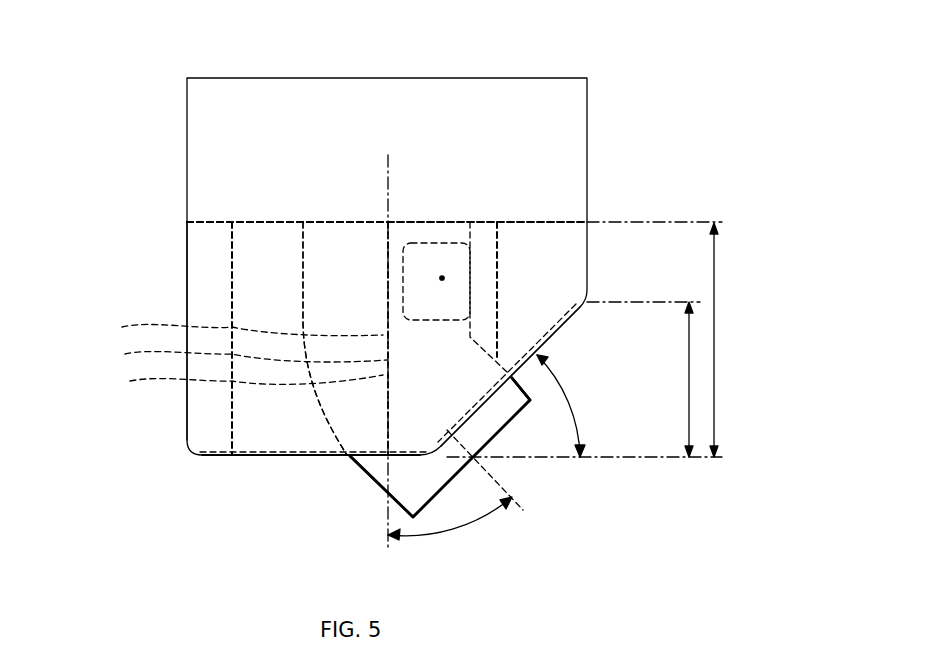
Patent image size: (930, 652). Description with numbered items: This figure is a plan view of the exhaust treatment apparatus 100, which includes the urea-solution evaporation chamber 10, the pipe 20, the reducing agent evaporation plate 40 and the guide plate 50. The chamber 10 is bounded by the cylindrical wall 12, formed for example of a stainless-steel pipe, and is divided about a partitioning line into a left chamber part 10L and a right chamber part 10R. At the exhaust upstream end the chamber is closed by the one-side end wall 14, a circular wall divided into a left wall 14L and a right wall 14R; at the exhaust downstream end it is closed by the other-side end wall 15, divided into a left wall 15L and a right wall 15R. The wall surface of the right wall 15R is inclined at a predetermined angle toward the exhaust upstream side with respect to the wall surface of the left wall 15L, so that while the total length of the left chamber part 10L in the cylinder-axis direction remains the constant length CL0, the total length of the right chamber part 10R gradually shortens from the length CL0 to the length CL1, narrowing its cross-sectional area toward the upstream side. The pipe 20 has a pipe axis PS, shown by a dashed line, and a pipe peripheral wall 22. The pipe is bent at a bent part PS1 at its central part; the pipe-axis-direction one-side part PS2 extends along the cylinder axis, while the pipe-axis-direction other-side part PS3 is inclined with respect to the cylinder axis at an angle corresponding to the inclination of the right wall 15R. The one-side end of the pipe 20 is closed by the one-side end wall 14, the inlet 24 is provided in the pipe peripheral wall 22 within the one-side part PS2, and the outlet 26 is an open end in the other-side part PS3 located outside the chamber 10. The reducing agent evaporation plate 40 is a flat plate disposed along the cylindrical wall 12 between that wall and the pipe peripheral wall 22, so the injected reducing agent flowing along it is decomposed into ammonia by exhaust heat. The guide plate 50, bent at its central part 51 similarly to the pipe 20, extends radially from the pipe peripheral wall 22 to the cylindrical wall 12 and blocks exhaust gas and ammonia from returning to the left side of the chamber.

The exhaust treatment apparatus 100 is at (608, 75).
The urea-solution evaporation chamber 10 is at (295, 428).
The left chamber part 10L is at (313, 374).
The right chamber part 10R is at (537, 317).
The cylindrical wall 12 is at (187, 310).
The one-side end wall 14 is at (232, 224).
The left wall 14L is at (234, 247).
The right wall 14R is at (553, 226).
The other-side end wall 15 is at (248, 460).
The left wall 15L is at (304, 491).
The right wall 15R is at (552, 342).
The pipe 20 is at (377, 485).
The pipe peripheral wall 22 is at (440, 473).
The inlet 24 is at (442, 278).
The outlet 26 is at (528, 402).
The reducing agent evaporation plate 40 is at (232, 403).
The guide plate 50 is at (235, 330).
The central part 51 is at (238, 355).
The bent part PS1 is at (235, 386).
The pipe axis PS is at (388, 193).
The pipe-axis-direction one-side part PS2 is at (451, 314).
The pipe-axis-direction other-side part PS3 is at (497, 482).
The center plane CS is at (388, 168).
The constant length CL0 is at (715, 324).
The length CL1 is at (688, 394).